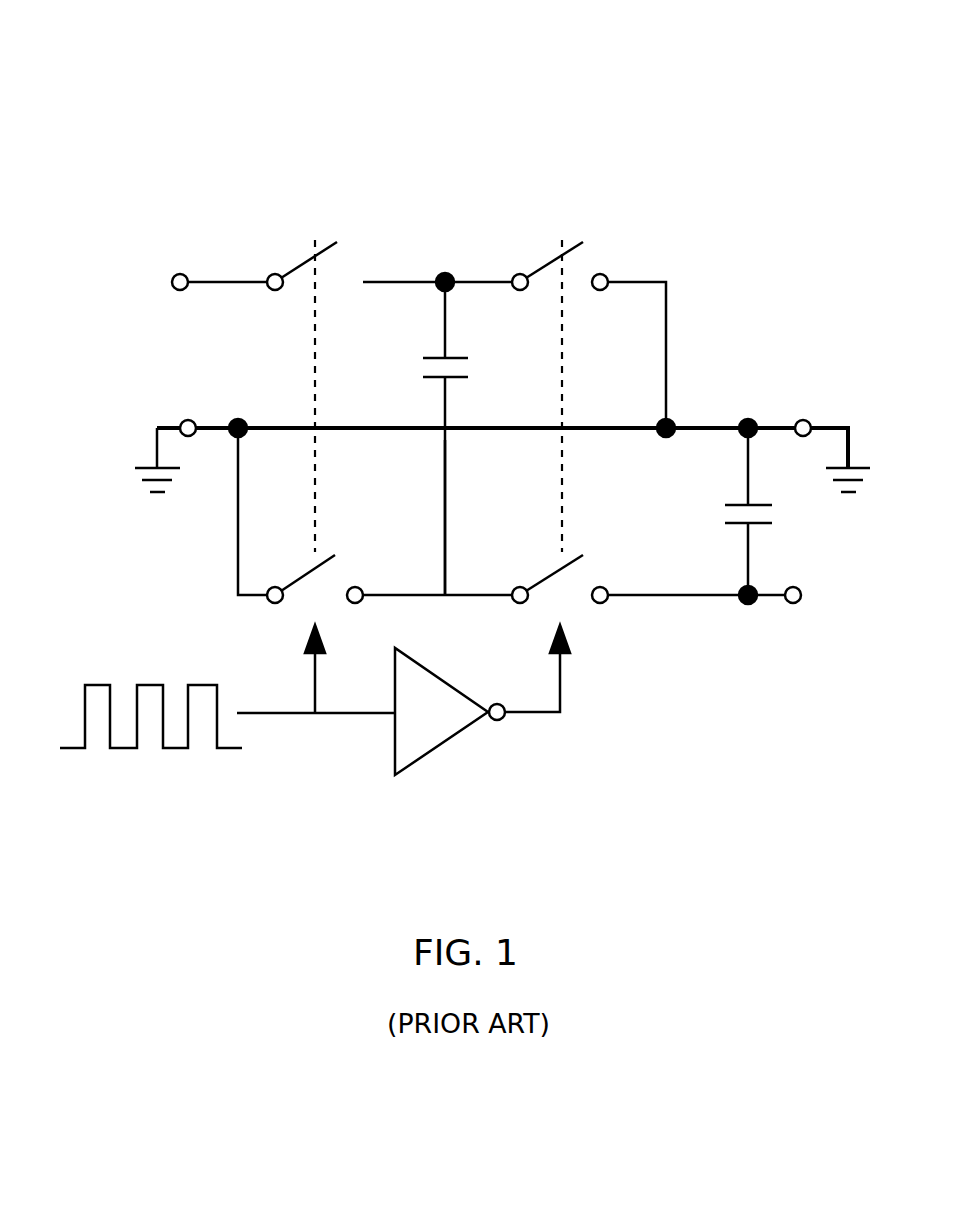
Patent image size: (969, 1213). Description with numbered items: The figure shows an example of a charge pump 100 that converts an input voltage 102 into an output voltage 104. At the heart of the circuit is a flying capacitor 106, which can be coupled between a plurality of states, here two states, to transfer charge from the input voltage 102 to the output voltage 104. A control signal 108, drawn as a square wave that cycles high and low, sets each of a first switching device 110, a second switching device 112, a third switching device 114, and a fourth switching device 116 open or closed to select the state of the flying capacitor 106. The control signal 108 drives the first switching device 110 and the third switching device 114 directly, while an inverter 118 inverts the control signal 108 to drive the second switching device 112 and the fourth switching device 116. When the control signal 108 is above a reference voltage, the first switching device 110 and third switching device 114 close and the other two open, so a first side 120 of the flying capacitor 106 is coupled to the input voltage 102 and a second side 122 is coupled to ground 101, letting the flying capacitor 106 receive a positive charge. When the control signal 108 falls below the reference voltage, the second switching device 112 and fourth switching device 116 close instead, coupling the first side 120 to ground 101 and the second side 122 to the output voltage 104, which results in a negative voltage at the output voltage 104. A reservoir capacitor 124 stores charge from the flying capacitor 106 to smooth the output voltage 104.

The charge pump 100 is at (297, 100).
The ground 101 is at (188, 418).
The input voltage 102 is at (180, 270).
The output voltage 104 is at (792, 607).
The flying capacitor 106 is at (455, 380).
The control signal 108 is at (147, 680).
The first switching device 110 is at (330, 237).
The second switching device 112 is at (573, 242).
The third switching device 114 is at (330, 555).
The fourth switching device 116 is at (577, 552).
The inverter 118 is at (448, 740).
The first side 120 is at (442, 307).
The second side 122 is at (443, 552).
The reservoir capacitor 124 is at (758, 525).